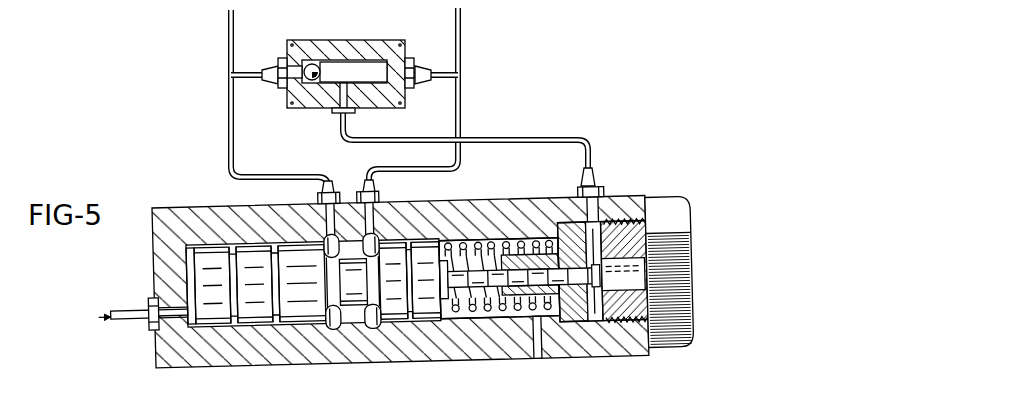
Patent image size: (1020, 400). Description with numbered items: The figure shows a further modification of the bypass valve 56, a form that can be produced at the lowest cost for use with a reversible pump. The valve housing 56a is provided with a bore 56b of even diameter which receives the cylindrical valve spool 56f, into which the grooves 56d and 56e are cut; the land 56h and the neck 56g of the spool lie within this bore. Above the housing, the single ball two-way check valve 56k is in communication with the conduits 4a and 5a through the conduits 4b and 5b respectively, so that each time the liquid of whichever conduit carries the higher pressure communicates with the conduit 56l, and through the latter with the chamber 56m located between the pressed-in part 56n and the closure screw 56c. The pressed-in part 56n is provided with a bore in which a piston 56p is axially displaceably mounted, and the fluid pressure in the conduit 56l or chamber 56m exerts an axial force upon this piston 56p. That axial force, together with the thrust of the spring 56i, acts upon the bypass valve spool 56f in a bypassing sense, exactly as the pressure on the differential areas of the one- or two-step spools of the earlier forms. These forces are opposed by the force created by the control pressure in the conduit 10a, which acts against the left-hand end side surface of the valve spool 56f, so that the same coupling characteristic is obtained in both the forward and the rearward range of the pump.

The conduit 4a is at (233, 30).
The conduit 4b is at (248, 74).
The conduit 5a is at (461, 29).
The conduit 5b is at (444, 71).
The conduit 10a is at (117, 320).
The bypass valve 56 is at (693, 196).
The valve housing 56a is at (623, 205).
The bore 56b is at (483, 233).
The closure screw 56c is at (641, 350).
The groove 56d is at (373, 331).
The groove 56e is at (338, 331).
The valve spool 56f is at (206, 258).
The spool neck 56g is at (353, 298).
The spool land 56h is at (321, 316).
The spring 56i is at (493, 288).
The single ball two-way check valve 56k is at (353, 62).
The conduit 56l is at (511, 127).
The chamber 56m is at (598, 322).
The pressed-in part 56n is at (570, 322).
The piston 56p is at (480, 292).